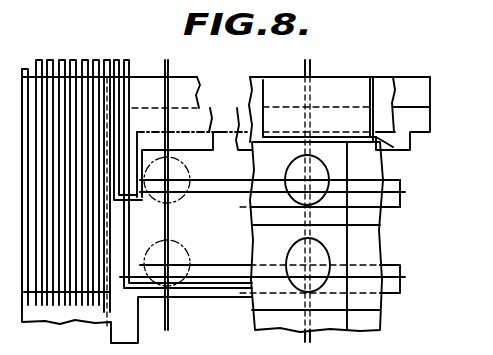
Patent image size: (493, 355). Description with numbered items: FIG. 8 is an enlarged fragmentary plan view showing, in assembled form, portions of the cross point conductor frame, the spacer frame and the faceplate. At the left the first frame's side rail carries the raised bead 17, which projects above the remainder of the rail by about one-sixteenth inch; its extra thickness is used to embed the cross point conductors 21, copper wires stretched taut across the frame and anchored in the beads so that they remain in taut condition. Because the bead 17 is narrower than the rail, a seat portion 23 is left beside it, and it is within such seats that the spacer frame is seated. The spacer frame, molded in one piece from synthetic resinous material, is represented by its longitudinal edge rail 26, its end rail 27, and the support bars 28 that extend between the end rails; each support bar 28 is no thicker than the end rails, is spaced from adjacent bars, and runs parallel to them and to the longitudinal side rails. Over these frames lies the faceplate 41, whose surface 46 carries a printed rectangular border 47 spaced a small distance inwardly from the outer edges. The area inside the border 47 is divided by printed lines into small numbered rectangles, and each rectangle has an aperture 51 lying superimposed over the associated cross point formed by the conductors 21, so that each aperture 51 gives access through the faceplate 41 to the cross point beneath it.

The raised bead 17 is at (401, 83).
The cross point conductors 21 is at (170, 79).
The seat portion 23 is at (192, 137).
The longitudinal edge rail 26 is at (393, 147).
The end rail 27 is at (82, 318).
The support bars 28 is at (225, 201).
The faceplate 41 is at (373, 323).
The surface of the faceplate 46 is at (290, 90).
The rectangular border 47 is at (318, 137).
The aperture 51 is at (290, 171).